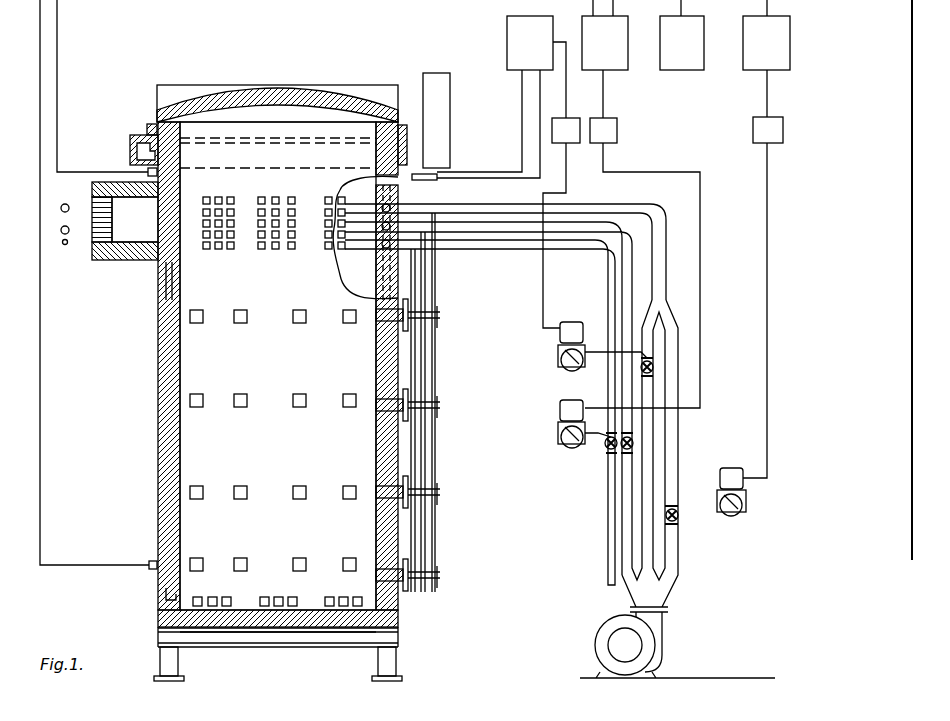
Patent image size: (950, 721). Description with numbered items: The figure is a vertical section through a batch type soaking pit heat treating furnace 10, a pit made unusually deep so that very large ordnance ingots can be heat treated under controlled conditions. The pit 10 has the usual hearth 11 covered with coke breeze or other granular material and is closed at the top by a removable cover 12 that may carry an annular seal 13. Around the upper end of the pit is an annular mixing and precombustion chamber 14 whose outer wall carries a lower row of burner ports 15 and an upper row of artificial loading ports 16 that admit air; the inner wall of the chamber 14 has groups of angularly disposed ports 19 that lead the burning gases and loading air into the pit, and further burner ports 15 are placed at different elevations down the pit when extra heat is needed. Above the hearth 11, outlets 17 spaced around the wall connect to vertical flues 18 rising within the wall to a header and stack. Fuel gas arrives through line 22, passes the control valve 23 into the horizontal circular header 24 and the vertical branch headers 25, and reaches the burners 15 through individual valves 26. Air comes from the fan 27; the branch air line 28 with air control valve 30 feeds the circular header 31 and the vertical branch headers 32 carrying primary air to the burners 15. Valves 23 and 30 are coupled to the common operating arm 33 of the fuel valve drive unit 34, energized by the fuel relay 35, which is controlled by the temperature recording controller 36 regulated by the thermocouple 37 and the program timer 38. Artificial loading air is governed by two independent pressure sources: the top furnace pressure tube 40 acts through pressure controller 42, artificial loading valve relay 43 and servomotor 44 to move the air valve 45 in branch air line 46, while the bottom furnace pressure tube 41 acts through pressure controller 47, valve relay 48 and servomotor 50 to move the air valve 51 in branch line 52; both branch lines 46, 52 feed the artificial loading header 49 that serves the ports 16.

The batch type soaking pit heat treating furnace 10 is at (118, 451).
The hearth 11 is at (207, 636).
The removable cover 12 is at (258, 92).
The annular seal 13 is at (148, 128).
The annular mixing and precombustion chamber 14 is at (125, 221).
The burner ports 15 is at (190, 317).
The artificial loading ports 16 is at (413, 197).
The outlets 17 is at (170, 602).
The vertical flues 18 is at (160, 511).
The angularly disposed ports 19 is at (164, 266).
The gas supply line 22 is at (608, 565).
The gas control valve 23 is at (606, 450).
The horizontal circular header 24 is at (66, 246).
The vertical branch headers 25 is at (415, 349).
The individual valves 26 is at (440, 320).
The fan 27 is at (642, 648).
The branch air line 28 is at (622, 525).
The air control valve 30 is at (635, 444).
The circular header 31 is at (64, 235).
The vertical branch headers 32 is at (436, 370).
The common operating arm 33 is at (576, 448).
The fuel valve drive unit 34 is at (558, 430).
The fuel relay 35 is at (605, 130).
The temperature recording controller 36 is at (605, 59).
The thermocouple 37 is at (135, 166).
The program timer 38 is at (682, 35).
The top furnace pressure tube 40 is at (405, 172).
The bottom furnace pressure tube 41 is at (150, 567).
The pressure controller 42 is at (501, 97).
The artificial loading valve relay 43 is at (571, 143).
The artificial loading valve drive unit 44 is at (560, 340).
The air valve 45 is at (655, 362).
The branch air line 46 is at (652, 390).
The pressure controller 47 is at (766, 58).
The valve relay 48 is at (765, 125).
The artificial loading header 49 is at (61, 207).
The servomotor 50 is at (745, 488).
The air valve 51 is at (679, 518).
The branch line 52 is at (679, 545).